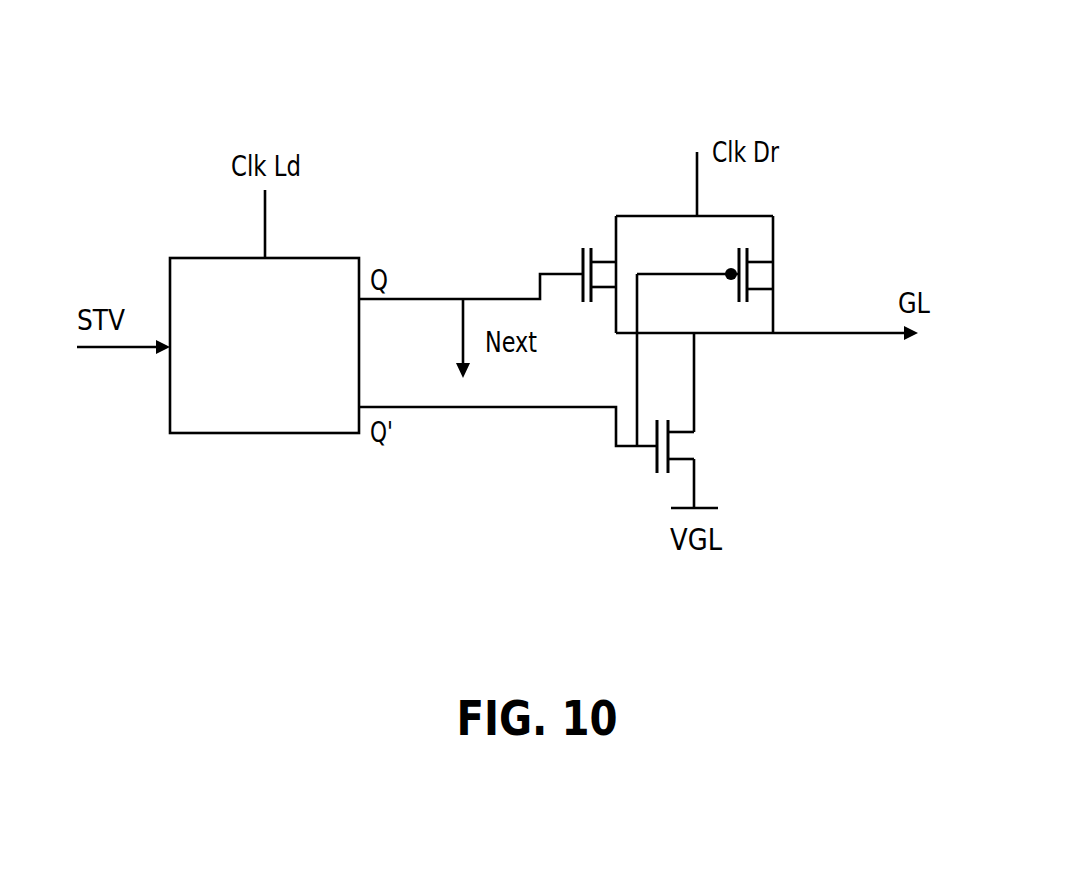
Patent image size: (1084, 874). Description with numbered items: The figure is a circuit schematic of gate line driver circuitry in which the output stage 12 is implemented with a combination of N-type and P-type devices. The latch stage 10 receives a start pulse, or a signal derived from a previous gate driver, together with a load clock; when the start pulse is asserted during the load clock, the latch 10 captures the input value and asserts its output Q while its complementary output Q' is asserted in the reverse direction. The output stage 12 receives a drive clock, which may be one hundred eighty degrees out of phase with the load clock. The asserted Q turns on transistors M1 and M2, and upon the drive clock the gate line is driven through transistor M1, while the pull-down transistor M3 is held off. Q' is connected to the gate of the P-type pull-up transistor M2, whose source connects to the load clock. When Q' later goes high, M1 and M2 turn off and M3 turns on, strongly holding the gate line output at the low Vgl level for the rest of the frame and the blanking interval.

The latch stage 10 is at (240, 433).
The output stage 12 is at (684, 257).
The transistor M1 is at (604, 275).
The pull-up transistor M2 is at (708, 275).
The pull-down transistor M3 is at (680, 446).